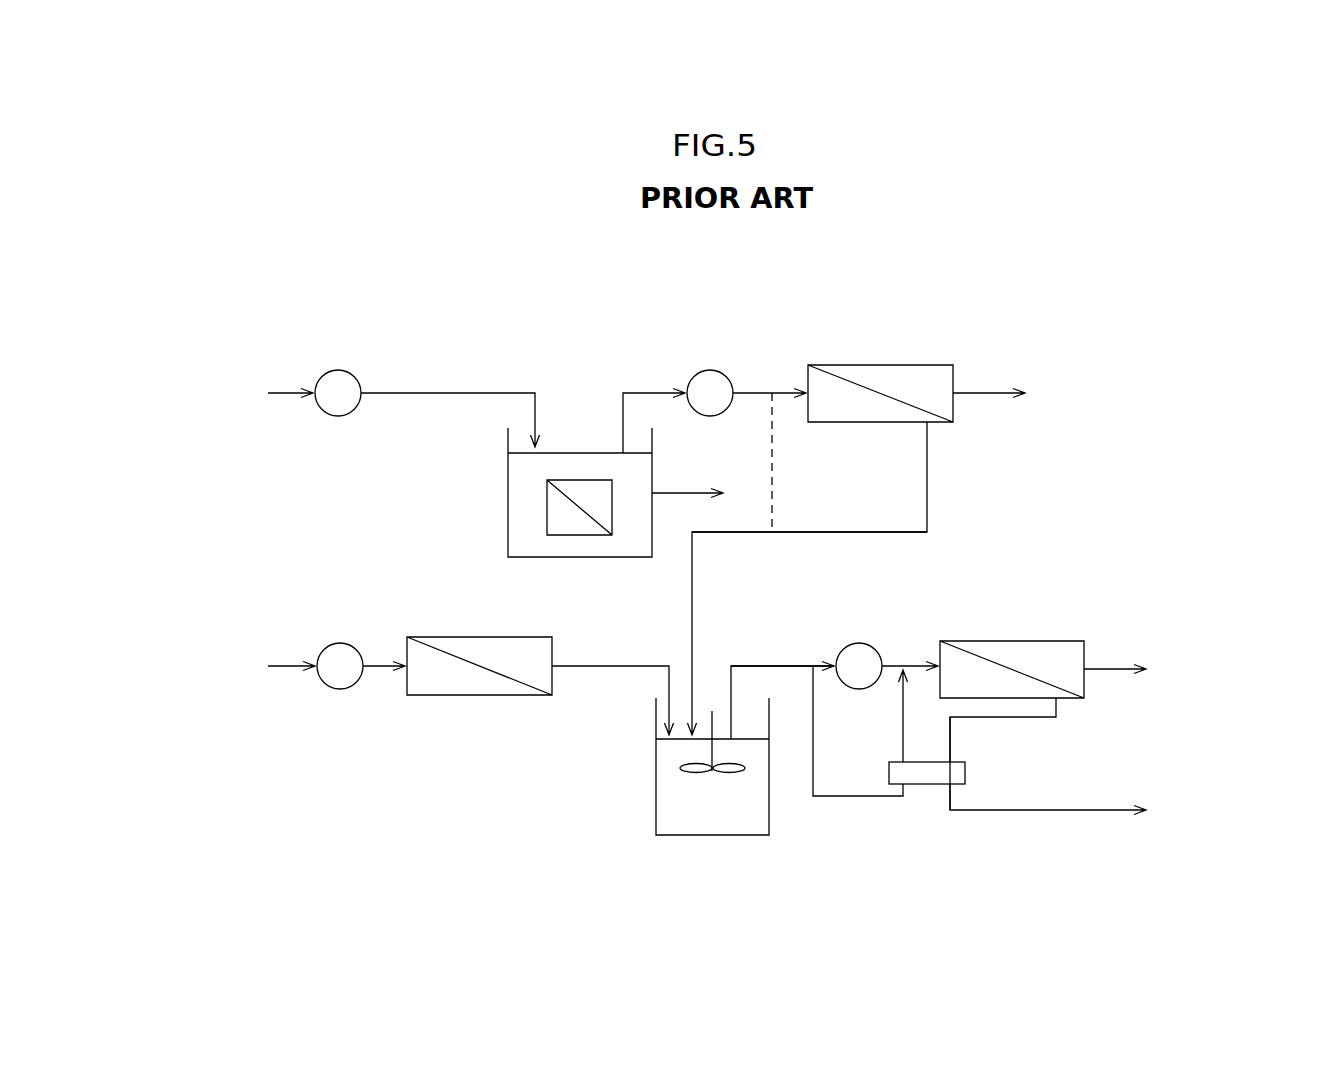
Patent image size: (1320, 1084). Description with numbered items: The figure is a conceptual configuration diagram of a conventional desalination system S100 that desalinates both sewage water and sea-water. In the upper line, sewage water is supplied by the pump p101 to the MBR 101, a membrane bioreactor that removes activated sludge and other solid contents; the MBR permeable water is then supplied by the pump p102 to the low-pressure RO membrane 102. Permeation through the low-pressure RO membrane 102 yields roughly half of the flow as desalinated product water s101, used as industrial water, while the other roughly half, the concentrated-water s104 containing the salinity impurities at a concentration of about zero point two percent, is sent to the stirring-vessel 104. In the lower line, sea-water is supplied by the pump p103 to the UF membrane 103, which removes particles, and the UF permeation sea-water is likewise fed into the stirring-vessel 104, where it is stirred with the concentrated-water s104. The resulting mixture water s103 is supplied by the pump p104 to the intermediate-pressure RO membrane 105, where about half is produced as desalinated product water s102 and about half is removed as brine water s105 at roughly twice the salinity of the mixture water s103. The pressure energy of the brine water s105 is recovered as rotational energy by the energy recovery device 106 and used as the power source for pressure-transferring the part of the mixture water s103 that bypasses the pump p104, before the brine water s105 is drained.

The desalination system S100 is at (1022, 244).
The pump p101 is at (338, 370).
The pump p102 is at (712, 370).
The pump p103 is at (340, 643).
The pump p104 is at (860, 643).
The MBR (Membrane Bioreactor) 101 is at (508, 493).
The low-pressure RO membrane 102 is at (853, 365).
The UF membrane 103 is at (445, 637).
The stirring-vessel 104 is at (656, 783).
The intermediate-pressure RO membrane 105 is at (983, 641).
The energy recovery device 106 is at (927, 787).
The product water s101 is at (1020, 393).
The product water s102 is at (1146, 669).
The mixture water s103 is at (768, 666).
The concentrated-water s104 is at (847, 532).
The brine water s105 is at (950, 742).